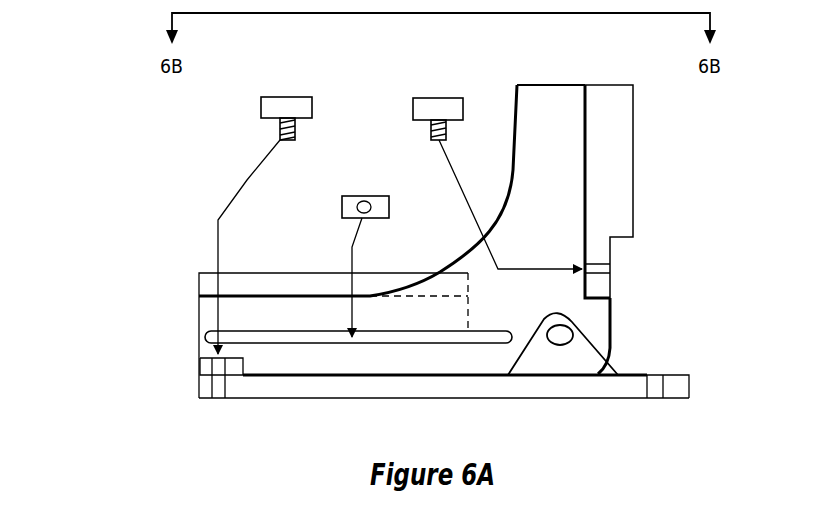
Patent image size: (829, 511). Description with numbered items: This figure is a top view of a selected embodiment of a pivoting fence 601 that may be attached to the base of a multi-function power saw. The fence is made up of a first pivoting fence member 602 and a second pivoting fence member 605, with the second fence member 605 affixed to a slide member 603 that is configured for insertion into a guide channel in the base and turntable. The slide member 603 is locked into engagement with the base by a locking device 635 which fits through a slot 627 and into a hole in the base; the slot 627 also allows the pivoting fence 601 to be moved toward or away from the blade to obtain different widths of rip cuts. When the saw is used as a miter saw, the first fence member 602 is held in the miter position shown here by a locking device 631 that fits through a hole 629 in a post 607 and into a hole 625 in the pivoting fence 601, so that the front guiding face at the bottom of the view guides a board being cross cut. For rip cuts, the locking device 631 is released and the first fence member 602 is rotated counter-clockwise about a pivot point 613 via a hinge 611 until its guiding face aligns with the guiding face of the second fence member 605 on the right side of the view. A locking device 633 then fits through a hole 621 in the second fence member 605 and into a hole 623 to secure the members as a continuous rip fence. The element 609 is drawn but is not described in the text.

The pivoting fence 601 is at (150, 242).
The first pivoting fence member 602 is at (545, 399).
The slide member 603 is at (199, 337).
The second pivoting fence member 605 is at (635, 138).
The post 607 is at (200, 365).
The curved plate 609 is at (547, 85).
The hinge 611 is at (612, 352).
The pivot point 613 is at (577, 336).
The hole 621 is at (611, 267).
The hole 623 is at (653, 399).
The hole 625 is at (218, 399).
The slot 627 is at (370, 345).
The hole 629 is at (213, 378).
The locking device 631 is at (270, 97).
The locking device 633 is at (421, 98).
The locking device 635 is at (365, 196).